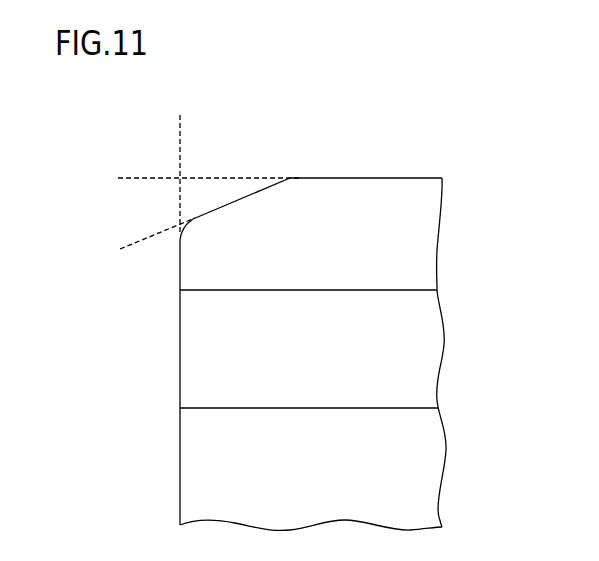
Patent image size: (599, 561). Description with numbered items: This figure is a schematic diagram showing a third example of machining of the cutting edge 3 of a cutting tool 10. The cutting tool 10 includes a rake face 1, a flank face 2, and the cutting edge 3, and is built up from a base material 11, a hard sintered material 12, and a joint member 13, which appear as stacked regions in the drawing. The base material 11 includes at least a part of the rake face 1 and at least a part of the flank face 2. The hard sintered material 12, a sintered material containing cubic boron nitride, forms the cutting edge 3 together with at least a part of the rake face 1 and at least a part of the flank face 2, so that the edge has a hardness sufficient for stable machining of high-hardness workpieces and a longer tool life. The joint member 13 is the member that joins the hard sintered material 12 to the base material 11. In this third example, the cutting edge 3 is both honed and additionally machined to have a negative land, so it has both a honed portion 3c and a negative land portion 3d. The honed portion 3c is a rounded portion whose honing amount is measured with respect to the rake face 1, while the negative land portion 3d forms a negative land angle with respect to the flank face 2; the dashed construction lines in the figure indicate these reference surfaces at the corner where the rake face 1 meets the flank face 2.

The rake face 1 is at (180, 353).
The flank face 2 is at (347, 178).
The cutting edge 3 is at (163, 168).
The honed portion 3c is at (180, 228).
The negative land portion 3d is at (230, 203).
The cutting tool 10 is at (460, 150).
The base material 11 is at (198, 470).
The hard sintered material 12 is at (422, 233).
The joint member 13 is at (423, 346).